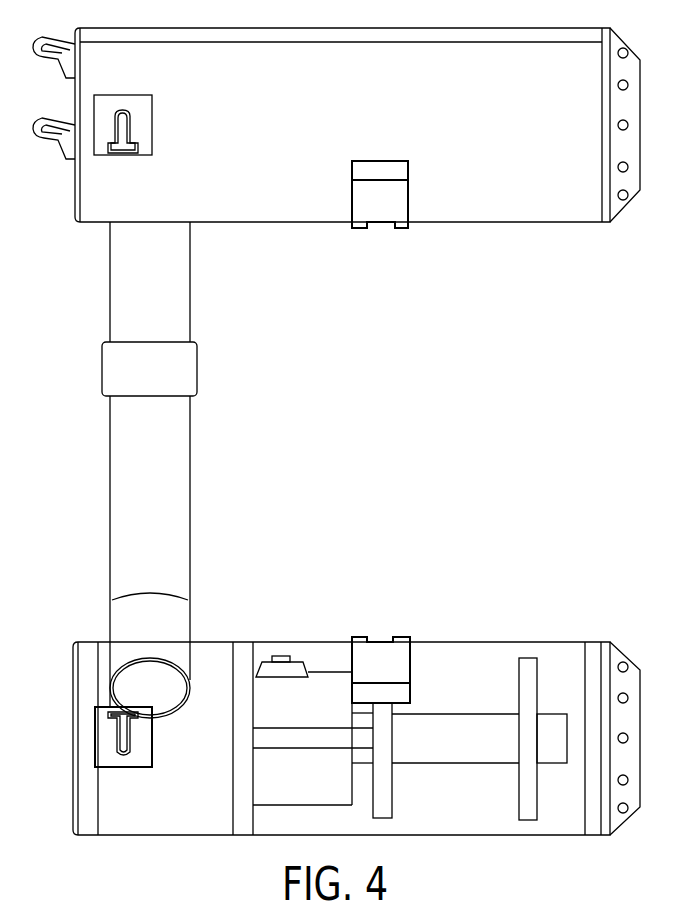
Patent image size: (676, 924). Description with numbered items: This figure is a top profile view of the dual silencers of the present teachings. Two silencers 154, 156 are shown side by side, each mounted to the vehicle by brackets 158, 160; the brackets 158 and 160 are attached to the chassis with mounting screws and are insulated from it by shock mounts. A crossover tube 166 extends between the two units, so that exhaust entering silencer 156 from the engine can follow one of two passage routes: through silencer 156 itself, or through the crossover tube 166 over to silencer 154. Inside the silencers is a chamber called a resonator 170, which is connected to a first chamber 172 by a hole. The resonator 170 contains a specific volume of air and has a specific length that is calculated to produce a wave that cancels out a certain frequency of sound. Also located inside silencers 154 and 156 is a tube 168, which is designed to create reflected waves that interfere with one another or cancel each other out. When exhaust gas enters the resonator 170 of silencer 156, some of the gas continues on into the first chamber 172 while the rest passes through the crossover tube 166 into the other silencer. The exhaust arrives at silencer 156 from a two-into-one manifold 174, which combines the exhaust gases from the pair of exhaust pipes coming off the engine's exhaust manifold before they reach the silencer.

The silencer 154 is at (438, 692).
The silencer 156 is at (485, 139).
The bracket 158 is at (138, 123).
The bracket 160 is at (365, 210).
The crossover tube 166 is at (135, 505).
The tube 168 is at (438, 749).
The resonator 170 is at (148, 809).
The first chamber 172 is at (438, 809).
The 2-1 manifold 174 is at (545, 809).